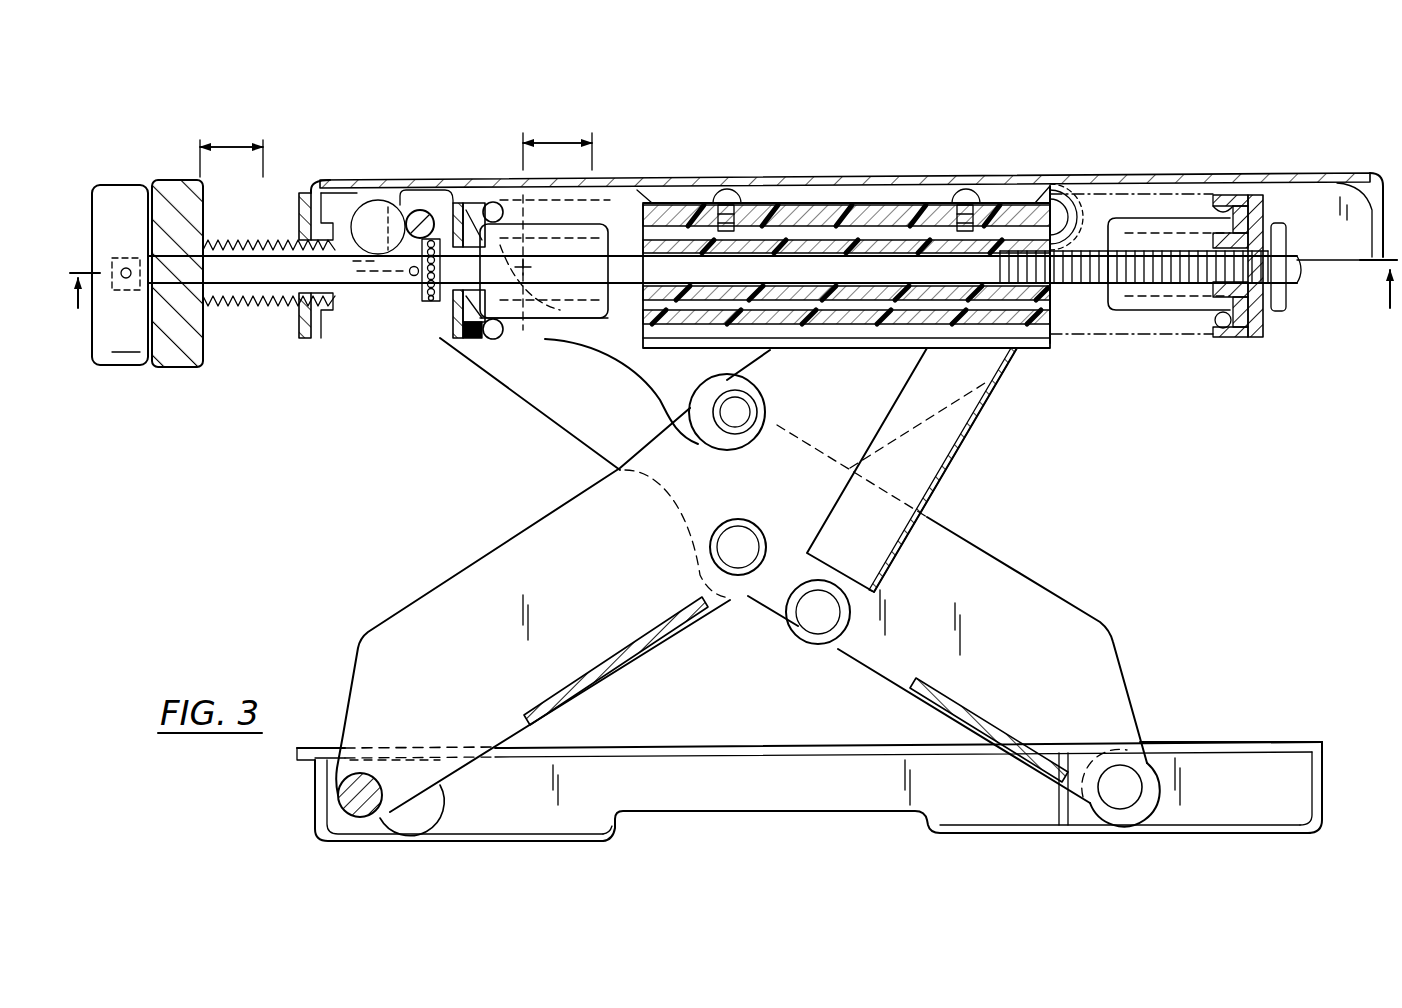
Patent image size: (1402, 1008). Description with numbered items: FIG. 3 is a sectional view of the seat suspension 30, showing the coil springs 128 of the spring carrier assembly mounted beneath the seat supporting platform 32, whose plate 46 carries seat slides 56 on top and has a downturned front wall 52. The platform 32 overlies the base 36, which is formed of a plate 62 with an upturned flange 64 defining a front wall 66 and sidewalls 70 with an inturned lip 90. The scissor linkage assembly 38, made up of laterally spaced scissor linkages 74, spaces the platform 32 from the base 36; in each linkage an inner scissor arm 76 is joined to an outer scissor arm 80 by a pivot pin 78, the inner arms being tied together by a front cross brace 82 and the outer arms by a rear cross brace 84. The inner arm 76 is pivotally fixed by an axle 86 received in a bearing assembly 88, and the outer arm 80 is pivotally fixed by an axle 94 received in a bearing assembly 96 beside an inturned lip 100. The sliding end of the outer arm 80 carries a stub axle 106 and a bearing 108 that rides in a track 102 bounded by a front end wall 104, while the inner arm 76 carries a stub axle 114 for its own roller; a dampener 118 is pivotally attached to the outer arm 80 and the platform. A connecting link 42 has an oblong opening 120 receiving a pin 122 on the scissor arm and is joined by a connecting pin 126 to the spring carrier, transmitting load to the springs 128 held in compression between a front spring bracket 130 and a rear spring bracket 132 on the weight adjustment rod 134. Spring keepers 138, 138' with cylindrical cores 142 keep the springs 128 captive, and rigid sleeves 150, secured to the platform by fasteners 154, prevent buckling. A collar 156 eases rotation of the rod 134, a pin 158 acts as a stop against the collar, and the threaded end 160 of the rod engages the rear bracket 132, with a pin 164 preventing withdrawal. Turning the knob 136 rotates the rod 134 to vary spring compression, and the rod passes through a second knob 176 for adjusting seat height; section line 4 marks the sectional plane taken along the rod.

The seat suspension 30 is at (1150, 94).
The platform 32 is at (355, 182).
The base 36 is at (830, 813).
The scissor linkage assembly 38 is at (1108, 478).
The connecting link 42 is at (674, 405).
The plate 46 is at (1168, 176).
The front wall 52 is at (308, 340).
The seat slides 56 is at (1348, 179).
The plate 62 is at (1324, 781).
The upturned flange 64 is at (510, 828).
The front wall 66 is at (313, 798).
The sidewalls 70 is at (641, 793).
The scissor linkage 74 is at (1148, 648).
The inner scissor arm 76 is at (612, 604).
The pivot pin 78 is at (740, 562).
The outer scissor arm 80 is at (1050, 643).
The front cross brace 82 is at (598, 692).
The rear cross brace 84 is at (938, 716).
The axle 86 is at (372, 804).
The bearing assembly 88 is at (348, 828).
The inturned lip 90 is at (1218, 740).
The axle 94 is at (422, 212).
The bearing assembly 96 is at (742, 746).
The inturned lip 100 is at (1318, 264).
The track 102 is at (1283, 762).
The front end wall 104 is at (1052, 816).
The stub axle 106 is at (1120, 792).
The bearing 108 is at (1146, 812).
The stub axle 114 is at (1058, 215).
The dampener 118 is at (950, 432).
The oblong opening 120 is at (672, 426).
The pin 122 is at (736, 435).
The connecting pin 126 is at (552, 322).
The springs 128 is at (490, 200).
The front spring bracket 130 is at (456, 342).
The rear spring bracket 132 is at (1266, 338).
The weight adjustment rod 134 is at (618, 255).
The knob 136 is at (114, 193).
The spring keeper 138 is at (1216, 294).
The spring keeper 138' is at (482, 384).
The cylindrical cores 142 is at (590, 328).
The sleeve 150 is at (830, 222).
The fasteners 154 is at (727, 200).
The collar 156 is at (431, 303).
The pin 158 is at (412, 276).
The threaded end 160 is at (1085, 250).
The pin 164 is at (1288, 300).
The knob 176 is at (165, 182).
The section line 4- 4 is at (731, 297).